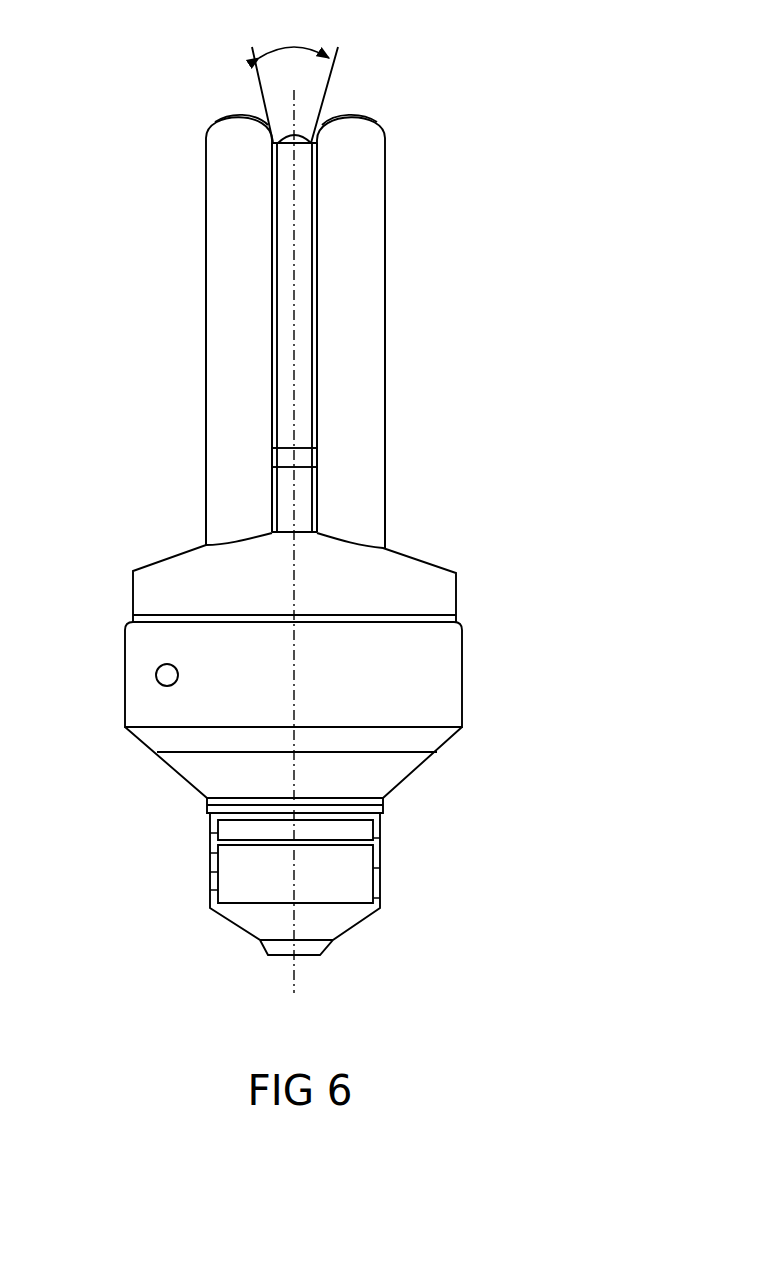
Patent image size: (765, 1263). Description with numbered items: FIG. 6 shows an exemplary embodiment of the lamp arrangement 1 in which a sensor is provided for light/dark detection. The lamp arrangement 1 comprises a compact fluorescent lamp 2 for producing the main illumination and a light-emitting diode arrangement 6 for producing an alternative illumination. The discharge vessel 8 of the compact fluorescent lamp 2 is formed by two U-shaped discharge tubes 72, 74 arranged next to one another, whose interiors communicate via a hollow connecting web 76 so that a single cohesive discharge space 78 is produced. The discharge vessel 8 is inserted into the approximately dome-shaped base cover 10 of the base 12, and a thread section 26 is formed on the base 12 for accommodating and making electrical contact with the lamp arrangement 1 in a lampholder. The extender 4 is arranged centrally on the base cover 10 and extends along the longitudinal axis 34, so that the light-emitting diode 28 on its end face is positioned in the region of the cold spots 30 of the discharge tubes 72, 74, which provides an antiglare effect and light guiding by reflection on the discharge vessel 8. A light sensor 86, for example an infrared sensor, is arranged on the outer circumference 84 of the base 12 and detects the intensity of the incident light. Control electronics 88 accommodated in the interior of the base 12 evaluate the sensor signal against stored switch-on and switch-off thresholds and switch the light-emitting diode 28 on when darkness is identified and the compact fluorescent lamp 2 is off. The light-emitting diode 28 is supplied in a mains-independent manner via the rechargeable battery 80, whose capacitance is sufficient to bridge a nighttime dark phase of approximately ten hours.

The lamp arrangement 1 is at (536, 151).
The compact fluorescent lamp 2 is at (199, 198).
The extender 4 is at (288, 327).
The light-emitting diode arrangement 6 is at (269, 140).
The discharge vessel 8 is at (391, 200).
The base cover 10 is at (152, 592).
The base 12 is at (442, 655).
The thread section 26 is at (204, 862).
The light-emitting diode 28 is at (318, 137).
The cold spots 30 is at (246, 108).
The longitudinal axis 34 is at (296, 975).
The discharge tube 72 is at (240, 266).
The discharge tube 74 is at (365, 320).
The hollow connecting web 76 is at (280, 457).
The discharge space 78 is at (363, 375).
The rechargeable battery 80 is at (357, 878).
The outer circumference 84 is at (463, 697).
The light sensor 86 is at (156, 675).
The control electronics 88 is at (360, 832).